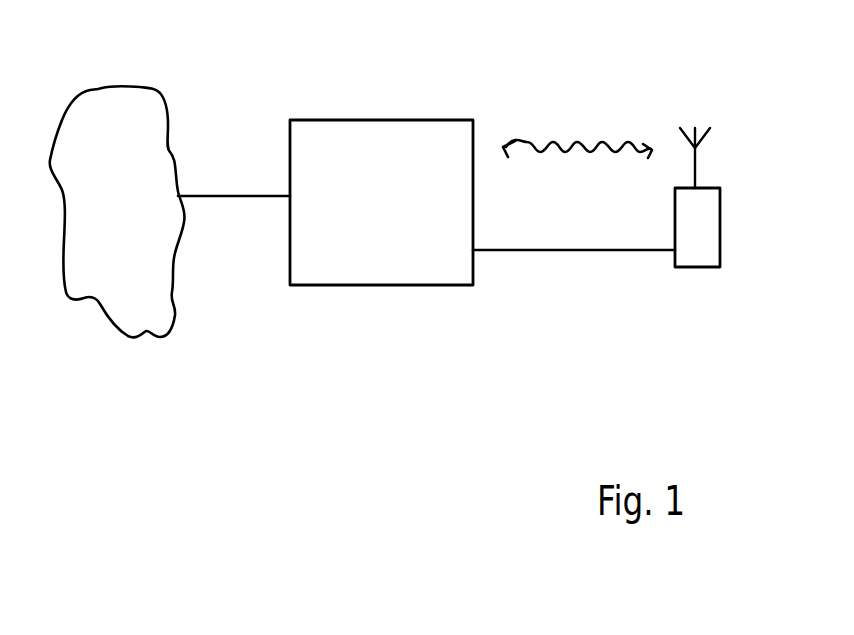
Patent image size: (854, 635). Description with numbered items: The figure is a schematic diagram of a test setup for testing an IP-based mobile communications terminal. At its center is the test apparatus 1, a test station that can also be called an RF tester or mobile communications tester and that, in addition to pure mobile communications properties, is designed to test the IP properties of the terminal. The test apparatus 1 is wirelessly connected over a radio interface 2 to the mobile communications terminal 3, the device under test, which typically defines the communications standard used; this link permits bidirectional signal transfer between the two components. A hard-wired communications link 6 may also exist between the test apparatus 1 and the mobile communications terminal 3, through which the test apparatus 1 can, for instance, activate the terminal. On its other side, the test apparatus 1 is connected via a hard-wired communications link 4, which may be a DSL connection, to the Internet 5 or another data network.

The test apparatus 1 is at (390, 120).
The radio interface 2 is at (577, 145).
The mobile communications terminal 3 is at (720, 225).
The hard-wired communications link 4 is at (222, 193).
The Internet 5 is at (126, 83).
The hard-wired communications link 6 is at (582, 253).